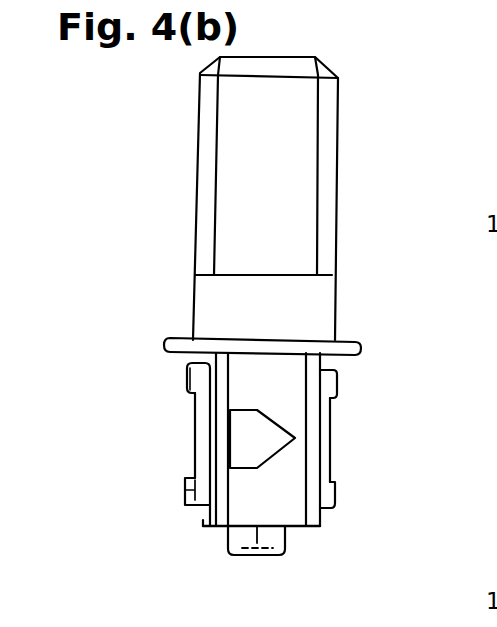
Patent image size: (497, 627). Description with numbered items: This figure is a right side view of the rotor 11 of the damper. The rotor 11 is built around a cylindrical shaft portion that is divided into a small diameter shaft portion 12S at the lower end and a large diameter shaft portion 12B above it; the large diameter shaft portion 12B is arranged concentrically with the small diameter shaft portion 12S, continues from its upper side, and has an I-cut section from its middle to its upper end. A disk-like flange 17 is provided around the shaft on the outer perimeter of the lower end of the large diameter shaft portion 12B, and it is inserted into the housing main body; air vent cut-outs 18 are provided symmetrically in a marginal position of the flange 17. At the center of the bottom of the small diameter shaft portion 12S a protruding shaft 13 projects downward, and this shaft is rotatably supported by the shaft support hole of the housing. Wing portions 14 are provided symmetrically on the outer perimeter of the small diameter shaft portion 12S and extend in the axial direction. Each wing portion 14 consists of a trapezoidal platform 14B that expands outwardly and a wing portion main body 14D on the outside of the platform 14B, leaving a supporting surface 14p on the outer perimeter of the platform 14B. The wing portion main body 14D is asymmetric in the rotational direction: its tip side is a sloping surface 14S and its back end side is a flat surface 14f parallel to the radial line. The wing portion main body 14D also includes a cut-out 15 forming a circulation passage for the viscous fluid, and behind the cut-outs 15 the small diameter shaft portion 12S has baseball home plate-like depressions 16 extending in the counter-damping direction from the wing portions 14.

The rotor 11 is at (197, 117).
The large diameter shaft portion 12B is at (303, 132).
The small diameter shaft portion 12S is at (288, 518).
The protruding shaft 13 is at (278, 541).
The wing portion 14 is at (173, 580).
The platform 14B is at (197, 515).
The wing portion main body 14D is at (190, 507).
The flat surface 14f is at (188, 487).
The supporting surface 14p is at (200, 528).
The sloping surface 14S is at (333, 503).
The cut-out 15 is at (193, 448).
The depression 16 is at (267, 452).
The disk-like flange 17 is at (305, 345).
The air vent cut-out 18 is at (193, 337).